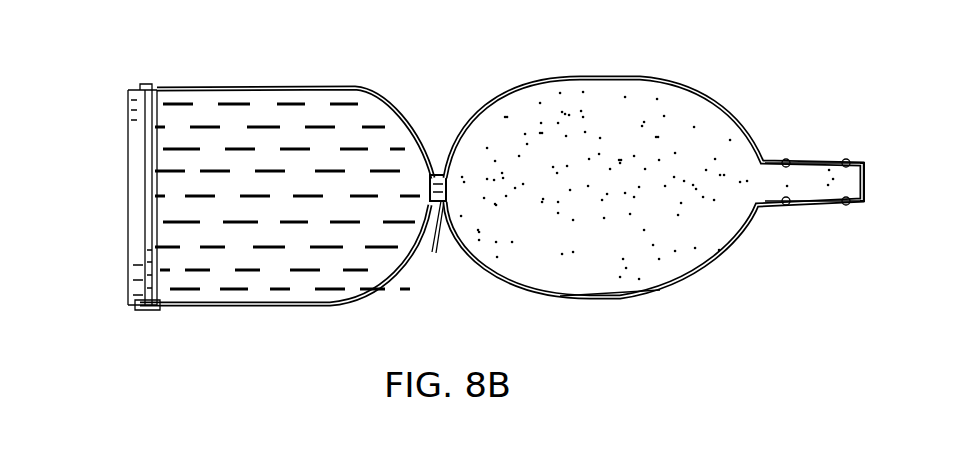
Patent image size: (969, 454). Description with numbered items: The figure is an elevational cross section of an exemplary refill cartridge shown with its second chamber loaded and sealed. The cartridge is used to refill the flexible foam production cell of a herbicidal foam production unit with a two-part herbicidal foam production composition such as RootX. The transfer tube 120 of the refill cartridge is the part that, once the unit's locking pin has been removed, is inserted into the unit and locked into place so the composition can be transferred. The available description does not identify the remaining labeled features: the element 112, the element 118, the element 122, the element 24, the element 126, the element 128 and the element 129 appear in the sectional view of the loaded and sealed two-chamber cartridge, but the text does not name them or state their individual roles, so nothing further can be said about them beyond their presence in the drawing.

The closure clamp 112 is at (148, 267).
The outlet port 118 is at (812, 203).
The transfer tube 120 is at (865, 180).
The first compartment with liquid 122 is at (284, 258).
The frangible seal / valve 24 is at (440, 243).
The second compartment with particulate 126 is at (585, 243).
The bottom seal 128 is at (190, 308).
The compartment wall 129 is at (655, 290).